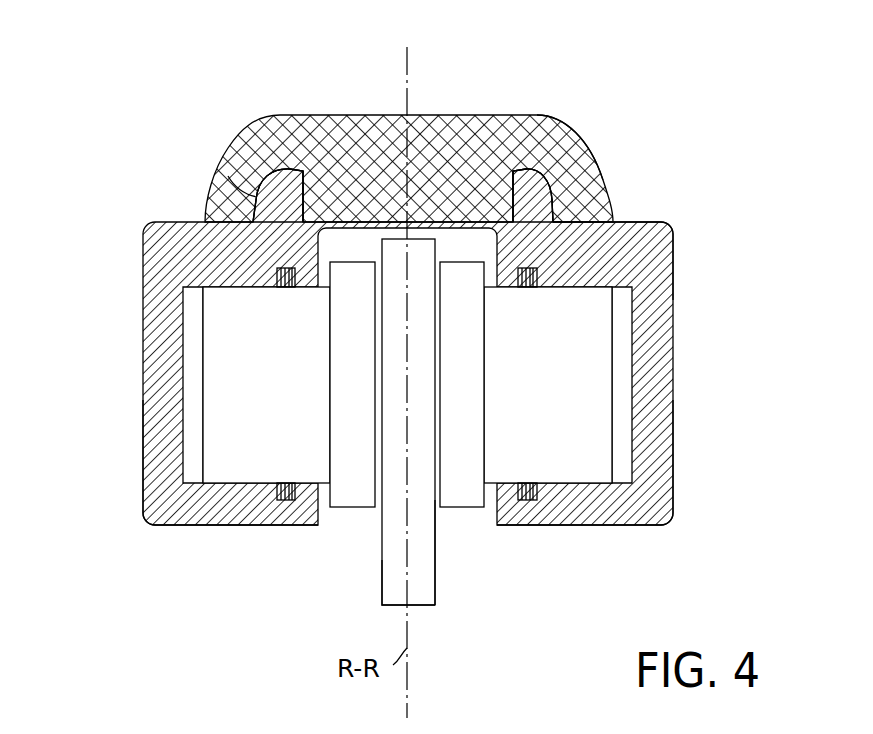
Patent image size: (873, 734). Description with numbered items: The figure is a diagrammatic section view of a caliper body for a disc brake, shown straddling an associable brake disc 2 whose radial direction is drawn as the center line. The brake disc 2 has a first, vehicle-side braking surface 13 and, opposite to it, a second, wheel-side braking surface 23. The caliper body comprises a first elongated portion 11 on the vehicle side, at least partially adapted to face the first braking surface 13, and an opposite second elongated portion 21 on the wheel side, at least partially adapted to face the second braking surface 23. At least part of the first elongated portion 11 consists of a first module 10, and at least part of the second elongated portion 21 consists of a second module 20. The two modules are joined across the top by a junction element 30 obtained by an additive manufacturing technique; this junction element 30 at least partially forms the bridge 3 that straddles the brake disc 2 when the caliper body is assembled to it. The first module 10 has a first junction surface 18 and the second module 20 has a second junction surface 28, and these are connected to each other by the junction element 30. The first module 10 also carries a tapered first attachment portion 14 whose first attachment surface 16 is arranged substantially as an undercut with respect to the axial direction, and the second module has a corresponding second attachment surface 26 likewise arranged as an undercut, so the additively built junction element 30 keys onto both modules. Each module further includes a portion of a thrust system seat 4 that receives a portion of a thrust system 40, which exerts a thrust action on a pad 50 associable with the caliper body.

The brake disc 2 is at (433, 605).
The bridge 3 is at (440, 114).
The thrust system seat 4 is at (188, 390).
The first module 10 is at (173, 258).
The first elongated portion 11 is at (152, 526).
The first braking surface 13 is at (380, 582).
The first attachment portion 14 is at (270, 190).
The first attachment surface 16 is at (228, 176).
The first junction surface 18 is at (305, 172).
The second module 20 is at (647, 258).
The second elongated portion 21 is at (647, 455).
The second braking surface 23 is at (433, 540).
The second attachment surface 26 is at (553, 205).
The second junction surface 28 is at (518, 168).
The junction element 30 is at (562, 140).
The thrust system 40 is at (283, 387).
The pad 50 is at (358, 483).